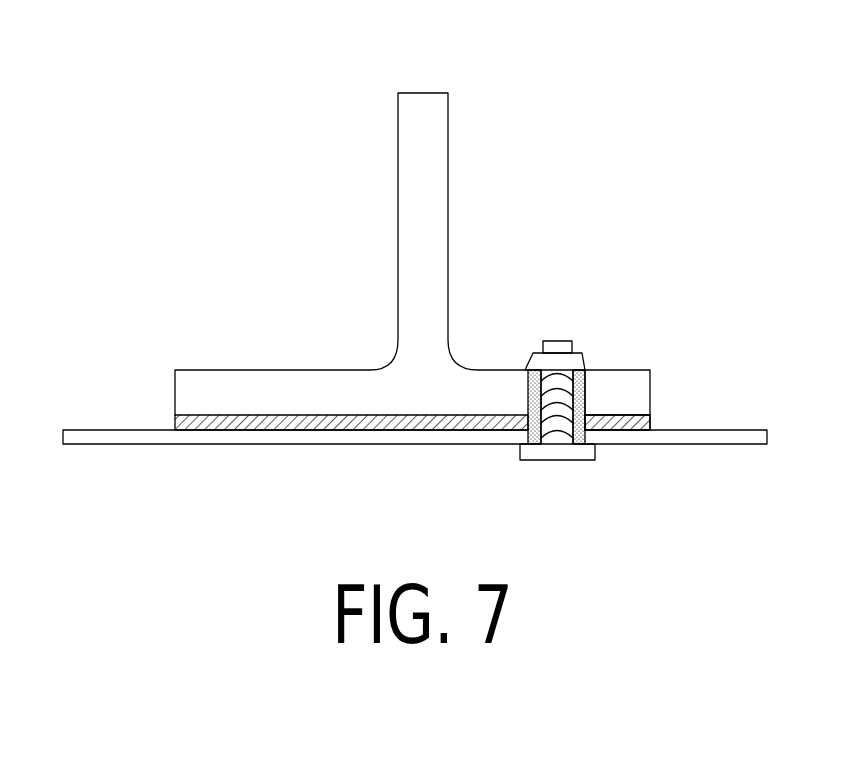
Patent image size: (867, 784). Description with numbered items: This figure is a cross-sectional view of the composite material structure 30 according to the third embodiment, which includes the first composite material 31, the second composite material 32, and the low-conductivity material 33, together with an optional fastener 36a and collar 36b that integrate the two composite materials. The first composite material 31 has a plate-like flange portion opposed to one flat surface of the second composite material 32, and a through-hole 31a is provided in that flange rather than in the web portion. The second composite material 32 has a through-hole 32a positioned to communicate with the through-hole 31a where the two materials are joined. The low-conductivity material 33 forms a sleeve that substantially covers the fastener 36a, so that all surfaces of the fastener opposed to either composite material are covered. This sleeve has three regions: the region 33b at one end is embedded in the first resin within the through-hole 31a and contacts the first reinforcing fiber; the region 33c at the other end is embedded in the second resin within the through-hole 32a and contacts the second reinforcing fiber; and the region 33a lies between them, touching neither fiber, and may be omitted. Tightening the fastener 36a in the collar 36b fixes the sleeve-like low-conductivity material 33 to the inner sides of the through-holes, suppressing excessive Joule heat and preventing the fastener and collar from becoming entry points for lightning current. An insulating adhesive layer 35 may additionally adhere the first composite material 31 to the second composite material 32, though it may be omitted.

The composite material structure 30 is at (463, 68).
The first composite material 31 is at (430, 122).
The through-hole 31a is at (584, 371).
The second composite material 32 is at (110, 428).
The through-hole 32a is at (575, 447).
The low-conductivity material 33 is at (576, 322).
The region 33a is at (588, 413).
The region 33b is at (588, 388).
The region 33c is at (587, 432).
The insulating adhesive layer 35 is at (322, 431).
The fastener 36a is at (555, 452).
The collar 36b is at (534, 342).